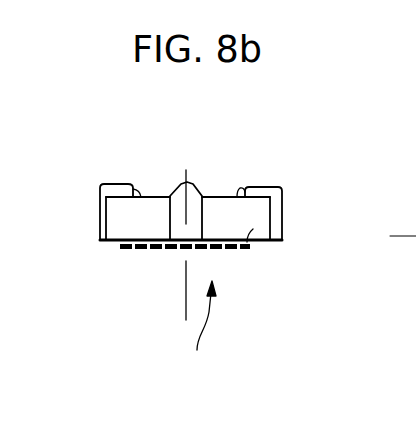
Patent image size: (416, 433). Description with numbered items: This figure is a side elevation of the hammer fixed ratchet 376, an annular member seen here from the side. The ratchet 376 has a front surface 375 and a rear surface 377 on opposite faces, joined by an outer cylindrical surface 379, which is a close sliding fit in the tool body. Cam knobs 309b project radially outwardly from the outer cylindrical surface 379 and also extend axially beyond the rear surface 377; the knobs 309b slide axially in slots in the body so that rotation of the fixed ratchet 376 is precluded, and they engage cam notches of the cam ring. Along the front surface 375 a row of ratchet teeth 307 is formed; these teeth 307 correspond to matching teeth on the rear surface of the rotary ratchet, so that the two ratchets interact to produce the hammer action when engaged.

The front surface 375 is at (113, 246).
The rear surface 377 is at (222, 197).
The cam knob 309b is at (284, 192).
The ratchet teeth 307 is at (143, 254).
The outer cylindrical surface 379 is at (249, 243).
The fixed ratchet 376 is at (206, 334).